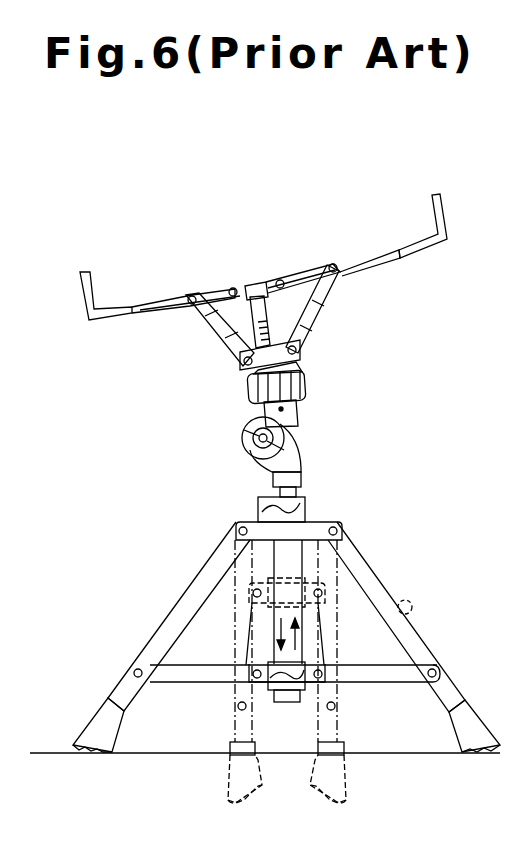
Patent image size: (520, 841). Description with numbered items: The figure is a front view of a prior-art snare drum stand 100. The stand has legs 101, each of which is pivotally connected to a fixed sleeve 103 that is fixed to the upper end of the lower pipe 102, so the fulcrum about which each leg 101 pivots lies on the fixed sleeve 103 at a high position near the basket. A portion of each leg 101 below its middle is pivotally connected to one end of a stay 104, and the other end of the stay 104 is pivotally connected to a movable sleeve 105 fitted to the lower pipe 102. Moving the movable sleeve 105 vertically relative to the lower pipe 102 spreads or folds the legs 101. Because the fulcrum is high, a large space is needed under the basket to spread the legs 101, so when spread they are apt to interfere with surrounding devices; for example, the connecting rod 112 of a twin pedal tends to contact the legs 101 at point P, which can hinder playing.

The snare drum stand 100 is at (168, 515).
The leg 101 is at (184, 597).
The lower pipe 102 is at (306, 556).
The fixed sleeve 103 is at (306, 505).
The stay 104 is at (198, 683).
The movable sleeve 105 is at (306, 670).
The connecting rod 112 is at (413, 605).
The point P is at (412, 621).